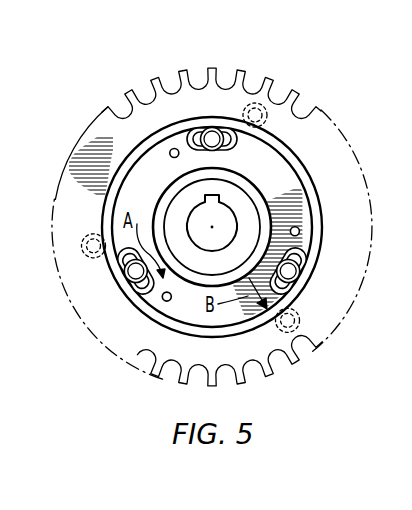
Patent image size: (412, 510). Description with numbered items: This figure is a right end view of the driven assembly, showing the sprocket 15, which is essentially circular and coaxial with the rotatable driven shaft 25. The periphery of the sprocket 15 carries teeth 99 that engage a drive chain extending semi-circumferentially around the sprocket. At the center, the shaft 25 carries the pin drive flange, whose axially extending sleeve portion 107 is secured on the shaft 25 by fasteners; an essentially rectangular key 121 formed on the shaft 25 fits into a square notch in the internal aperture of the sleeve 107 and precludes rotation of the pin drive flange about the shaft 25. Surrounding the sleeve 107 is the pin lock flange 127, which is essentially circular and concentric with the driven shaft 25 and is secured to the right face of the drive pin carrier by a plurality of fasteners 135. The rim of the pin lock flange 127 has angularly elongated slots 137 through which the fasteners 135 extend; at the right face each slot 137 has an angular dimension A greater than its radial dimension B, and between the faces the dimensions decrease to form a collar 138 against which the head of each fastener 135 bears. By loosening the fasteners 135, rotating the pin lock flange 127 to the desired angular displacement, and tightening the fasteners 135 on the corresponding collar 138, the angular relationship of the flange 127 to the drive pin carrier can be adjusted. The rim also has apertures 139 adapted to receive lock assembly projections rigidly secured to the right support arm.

The sprocket 15 is at (322, 110).
The teeth 99 is at (226, 71).
The rotatable driven shaft 25 is at (230, 224).
The sleeve portion 107 is at (236, 197).
The key 121 is at (203, 199).
The pin lock flange 127 is at (296, 170).
The fasteners 135 is at (211, 131).
The angularly elongated slots 137 is at (210, 130).
The collar 138 is at (238, 143).
The apertures 139 is at (170, 149).